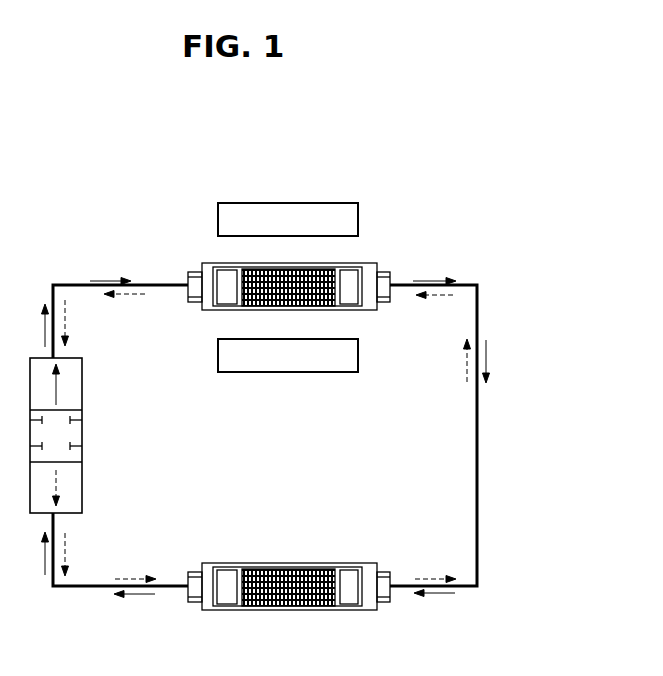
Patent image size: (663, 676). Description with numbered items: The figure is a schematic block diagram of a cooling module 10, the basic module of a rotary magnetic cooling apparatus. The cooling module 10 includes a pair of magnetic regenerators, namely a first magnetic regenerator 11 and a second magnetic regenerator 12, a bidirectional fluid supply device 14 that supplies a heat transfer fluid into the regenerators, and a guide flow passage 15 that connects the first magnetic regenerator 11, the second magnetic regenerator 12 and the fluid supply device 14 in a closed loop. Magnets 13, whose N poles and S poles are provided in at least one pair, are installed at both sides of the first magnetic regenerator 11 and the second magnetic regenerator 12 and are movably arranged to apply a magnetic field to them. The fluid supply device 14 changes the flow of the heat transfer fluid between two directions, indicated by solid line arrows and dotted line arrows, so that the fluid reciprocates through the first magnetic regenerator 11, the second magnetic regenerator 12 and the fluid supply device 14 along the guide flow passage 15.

The cooling module 10 is at (110, 148).
The first magnetic regenerator 11 is at (381, 264).
The second magnetic regenerator 12 is at (314, 562).
The magnets 13 is at (333, 203).
The bidirectional fluid supply device 14 is at (82, 385).
The guide flow passage 15 is at (158, 284).